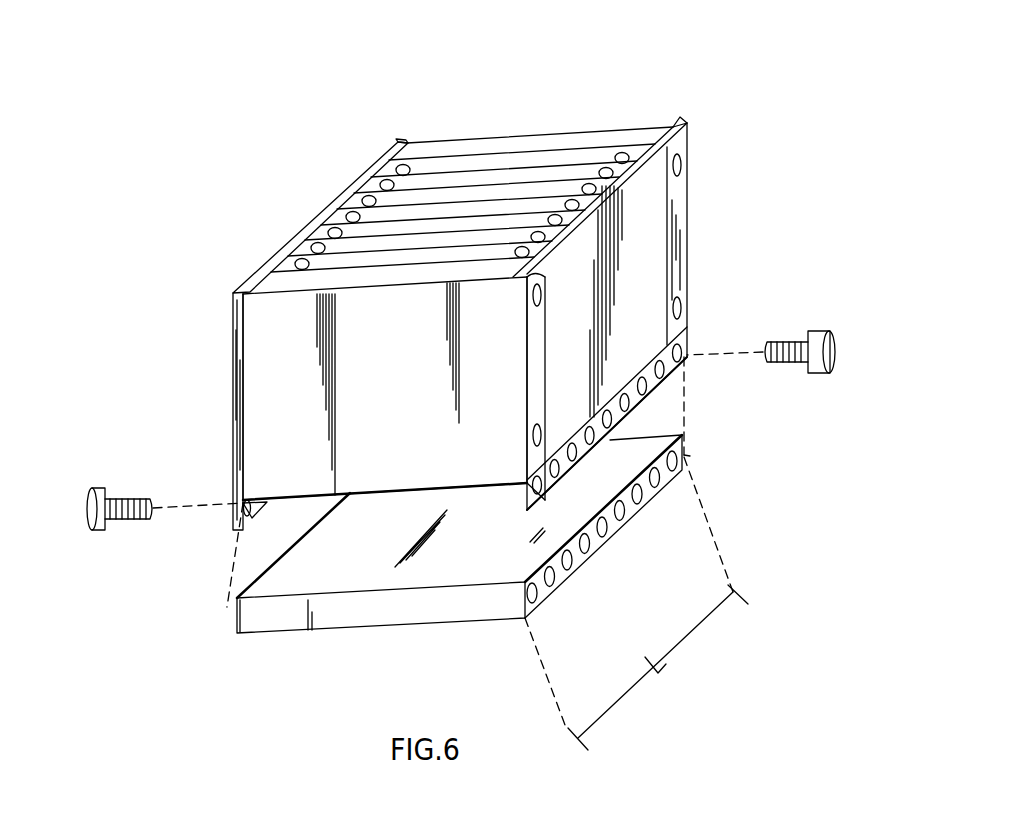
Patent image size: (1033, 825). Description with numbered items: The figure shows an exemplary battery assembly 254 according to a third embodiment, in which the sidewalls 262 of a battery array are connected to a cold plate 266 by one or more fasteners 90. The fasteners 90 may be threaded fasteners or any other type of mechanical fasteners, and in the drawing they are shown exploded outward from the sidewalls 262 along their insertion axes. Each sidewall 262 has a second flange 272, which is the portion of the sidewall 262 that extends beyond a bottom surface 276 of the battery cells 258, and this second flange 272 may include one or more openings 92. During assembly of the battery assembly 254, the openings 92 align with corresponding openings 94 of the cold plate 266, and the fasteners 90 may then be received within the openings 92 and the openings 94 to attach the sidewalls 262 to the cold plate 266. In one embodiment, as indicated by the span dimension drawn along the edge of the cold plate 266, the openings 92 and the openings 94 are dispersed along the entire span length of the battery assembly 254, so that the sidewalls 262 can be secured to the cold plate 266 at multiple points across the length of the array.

The battery assembly 254 is at (470, 68).
The battery cells 258 is at (444, 250).
The sidewalls 262 is at (657, 241).
The fasteners 90 is at (99, 531).
The openings 92 is at (627, 406).
The second flange 272 is at (232, 522).
The bottom surface 276 is at (405, 494).
The cold plate 266 is at (403, 612).
The openings 94 is at (536, 595).